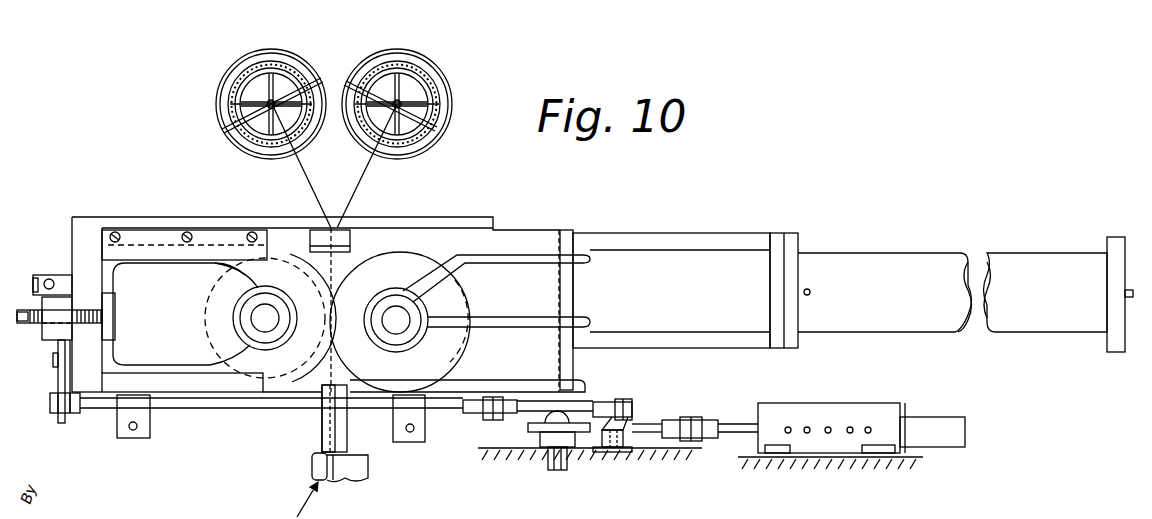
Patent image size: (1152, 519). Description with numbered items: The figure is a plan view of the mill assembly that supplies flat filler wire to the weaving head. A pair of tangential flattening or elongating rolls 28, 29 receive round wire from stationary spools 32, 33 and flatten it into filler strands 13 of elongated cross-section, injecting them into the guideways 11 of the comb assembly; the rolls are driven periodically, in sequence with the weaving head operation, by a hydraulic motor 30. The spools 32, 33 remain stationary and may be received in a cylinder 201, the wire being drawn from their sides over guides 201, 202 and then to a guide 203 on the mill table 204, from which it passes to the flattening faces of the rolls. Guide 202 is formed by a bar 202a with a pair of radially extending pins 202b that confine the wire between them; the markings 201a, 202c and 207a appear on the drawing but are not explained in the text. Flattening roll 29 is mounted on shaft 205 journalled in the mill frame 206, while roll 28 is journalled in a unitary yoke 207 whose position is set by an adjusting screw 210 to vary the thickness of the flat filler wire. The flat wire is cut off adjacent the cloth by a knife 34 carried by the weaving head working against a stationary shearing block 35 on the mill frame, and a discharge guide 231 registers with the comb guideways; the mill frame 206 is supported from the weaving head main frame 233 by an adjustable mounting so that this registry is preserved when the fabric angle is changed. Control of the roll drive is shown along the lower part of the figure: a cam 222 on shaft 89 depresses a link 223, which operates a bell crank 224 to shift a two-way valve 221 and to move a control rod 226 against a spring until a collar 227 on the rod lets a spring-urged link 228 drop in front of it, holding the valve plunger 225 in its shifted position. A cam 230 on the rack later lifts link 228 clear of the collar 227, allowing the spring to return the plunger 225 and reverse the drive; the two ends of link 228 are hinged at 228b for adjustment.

The guideway 11 is at (340, 478).
The filler strand 13 is at (352, 178).
The tangential flattening roll 28 is at (246, 268).
The flattening roll 29 is at (405, 265).
The hydraulic motor 30 is at (860, 250).
The spool 32 is at (228, 62).
The spool 33 is at (424, 58).
The knife 34 is at (318, 453).
The shearing block 35 is at (328, 430).
The shaft 89 is at (556, 470).
The cylinder 201 is at (264, 127).
The spoke 201a is at (433, 150).
The guide 202 is at (236, 113).
The bar 202a is at (428, 110).
The radially extending pin 202b is at (402, 103).
The bar 202c is at (314, 73).
The guide 203 is at (340, 235).
The mill table 204 is at (373, 238).
The shaft 205 is at (400, 320).
The mill frame 206 is at (90, 215).
The yoke 207 is at (179, 314).
The screw strip 207a is at (148, 245).
The adjusting screw 210 is at (86, 310).
The two-way valve 221 is at (855, 403).
The cam 222 is at (528, 428).
The link 223 is at (592, 402).
The bell crank 224 is at (630, 452).
The plunger 225 is at (752, 424).
The control rod 226 is at (226, 410).
The collar 227 is at (50, 402).
The link 228 is at (57, 382).
The hinge 228b is at (54, 360).
The cam 230 is at (42, 278).
The discharge guide 231 is at (324, 395).
The weaving head main frame 233 is at (692, 458).